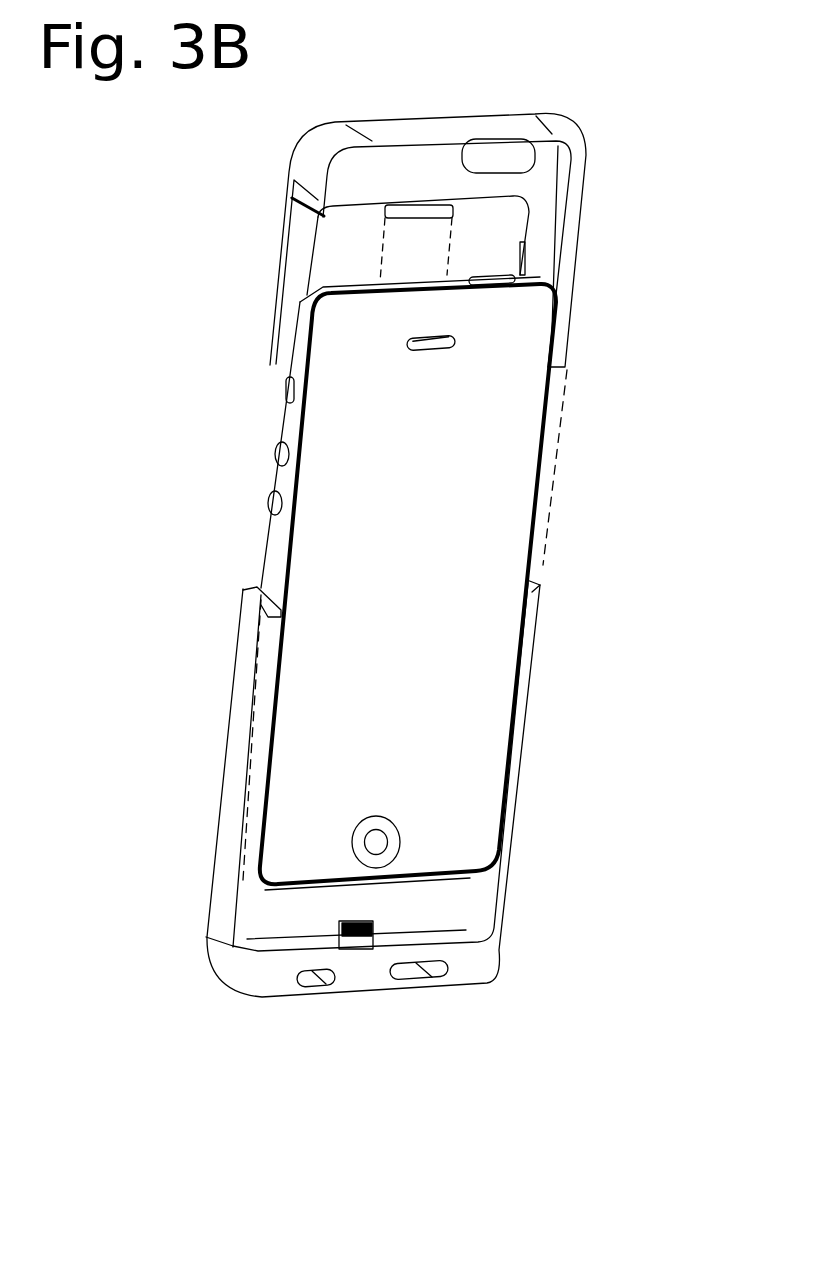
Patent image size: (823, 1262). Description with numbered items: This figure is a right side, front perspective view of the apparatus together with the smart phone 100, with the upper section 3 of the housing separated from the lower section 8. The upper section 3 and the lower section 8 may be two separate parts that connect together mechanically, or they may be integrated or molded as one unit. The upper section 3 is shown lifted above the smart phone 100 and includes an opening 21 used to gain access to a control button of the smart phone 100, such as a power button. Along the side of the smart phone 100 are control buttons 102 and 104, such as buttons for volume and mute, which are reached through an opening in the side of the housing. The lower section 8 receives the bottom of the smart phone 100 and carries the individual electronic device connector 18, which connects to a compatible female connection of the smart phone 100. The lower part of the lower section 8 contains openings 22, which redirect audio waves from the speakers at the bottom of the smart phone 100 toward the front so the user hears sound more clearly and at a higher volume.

The upper section 3 is at (324, 150).
The opening 21 is at (518, 123).
The lower section 8 is at (220, 958).
The smart phone 100 is at (425, 540).
The control button 102 is at (277, 444).
The control button 104 is at (272, 497).
The individual electronic device connector 18 is at (375, 931).
The openings 22 is at (413, 972).